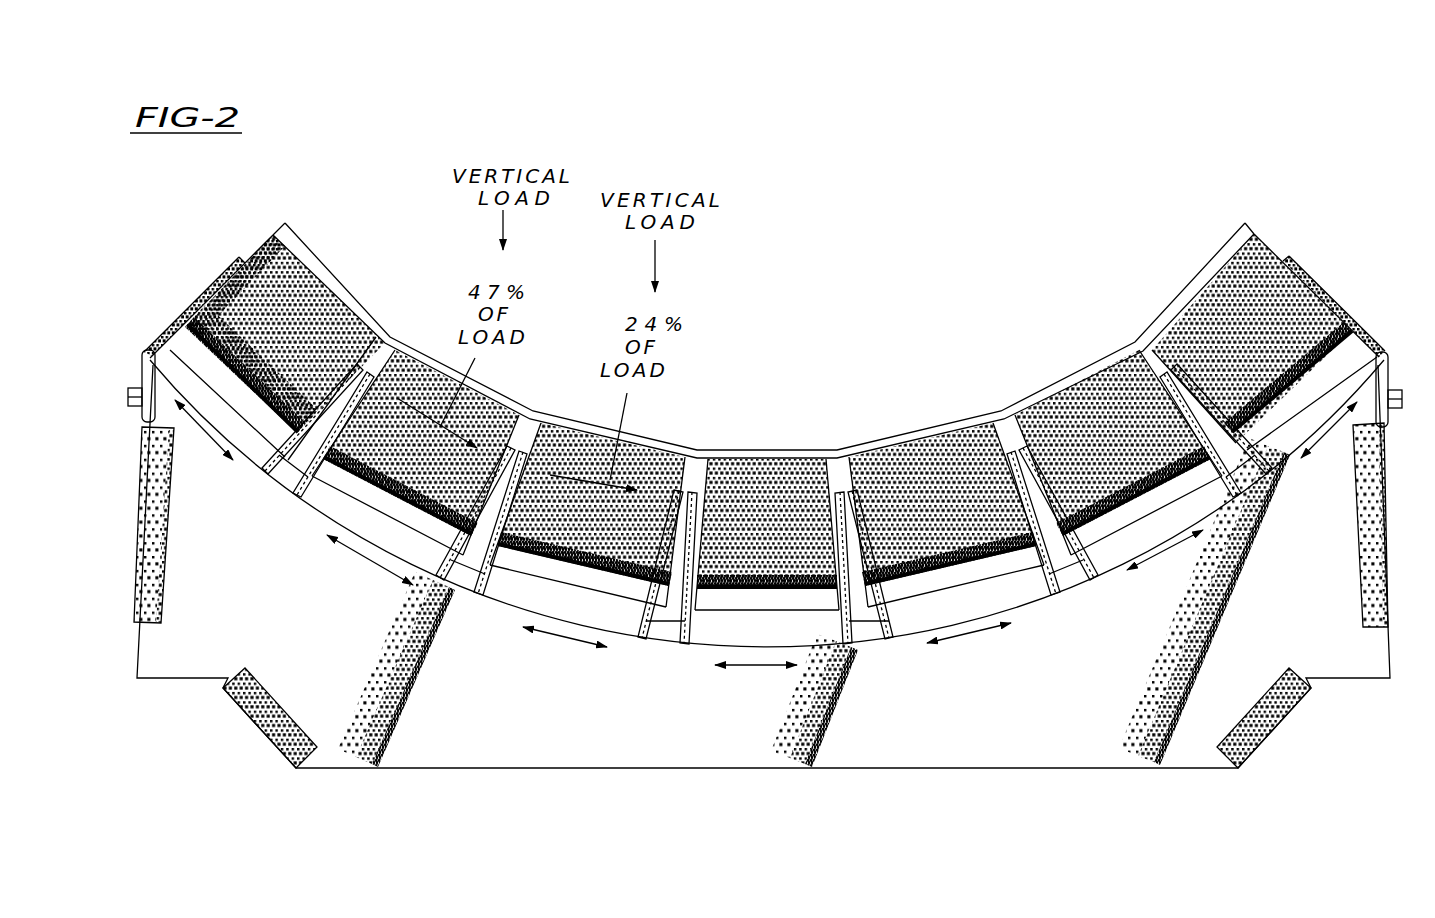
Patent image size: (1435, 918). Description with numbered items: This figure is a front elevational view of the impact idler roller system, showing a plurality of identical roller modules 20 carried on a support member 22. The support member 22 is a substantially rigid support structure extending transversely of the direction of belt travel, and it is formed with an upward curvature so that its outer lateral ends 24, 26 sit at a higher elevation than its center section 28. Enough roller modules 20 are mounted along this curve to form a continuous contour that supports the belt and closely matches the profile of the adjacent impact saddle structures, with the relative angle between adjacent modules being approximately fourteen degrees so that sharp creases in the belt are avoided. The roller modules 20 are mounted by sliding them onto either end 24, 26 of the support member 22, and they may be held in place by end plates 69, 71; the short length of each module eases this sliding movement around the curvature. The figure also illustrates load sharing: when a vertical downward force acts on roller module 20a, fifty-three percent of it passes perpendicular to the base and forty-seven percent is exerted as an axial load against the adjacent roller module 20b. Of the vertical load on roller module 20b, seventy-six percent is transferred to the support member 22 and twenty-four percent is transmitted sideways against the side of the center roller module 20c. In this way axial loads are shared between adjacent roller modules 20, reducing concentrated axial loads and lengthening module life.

The roller modules 20 is at (931, 438).
The roller module 20a is at (411, 372).
The roller module 20b is at (641, 425).
The center roller module 20c is at (765, 470).
The support member 22 is at (1330, 585).
The outer lateral end 24 is at (1370, 412).
The outer lateral end 26 is at (148, 358).
The center section 28 is at (797, 647).
The end plate 69 is at (1390, 357).
The end plate 71 is at (133, 406).